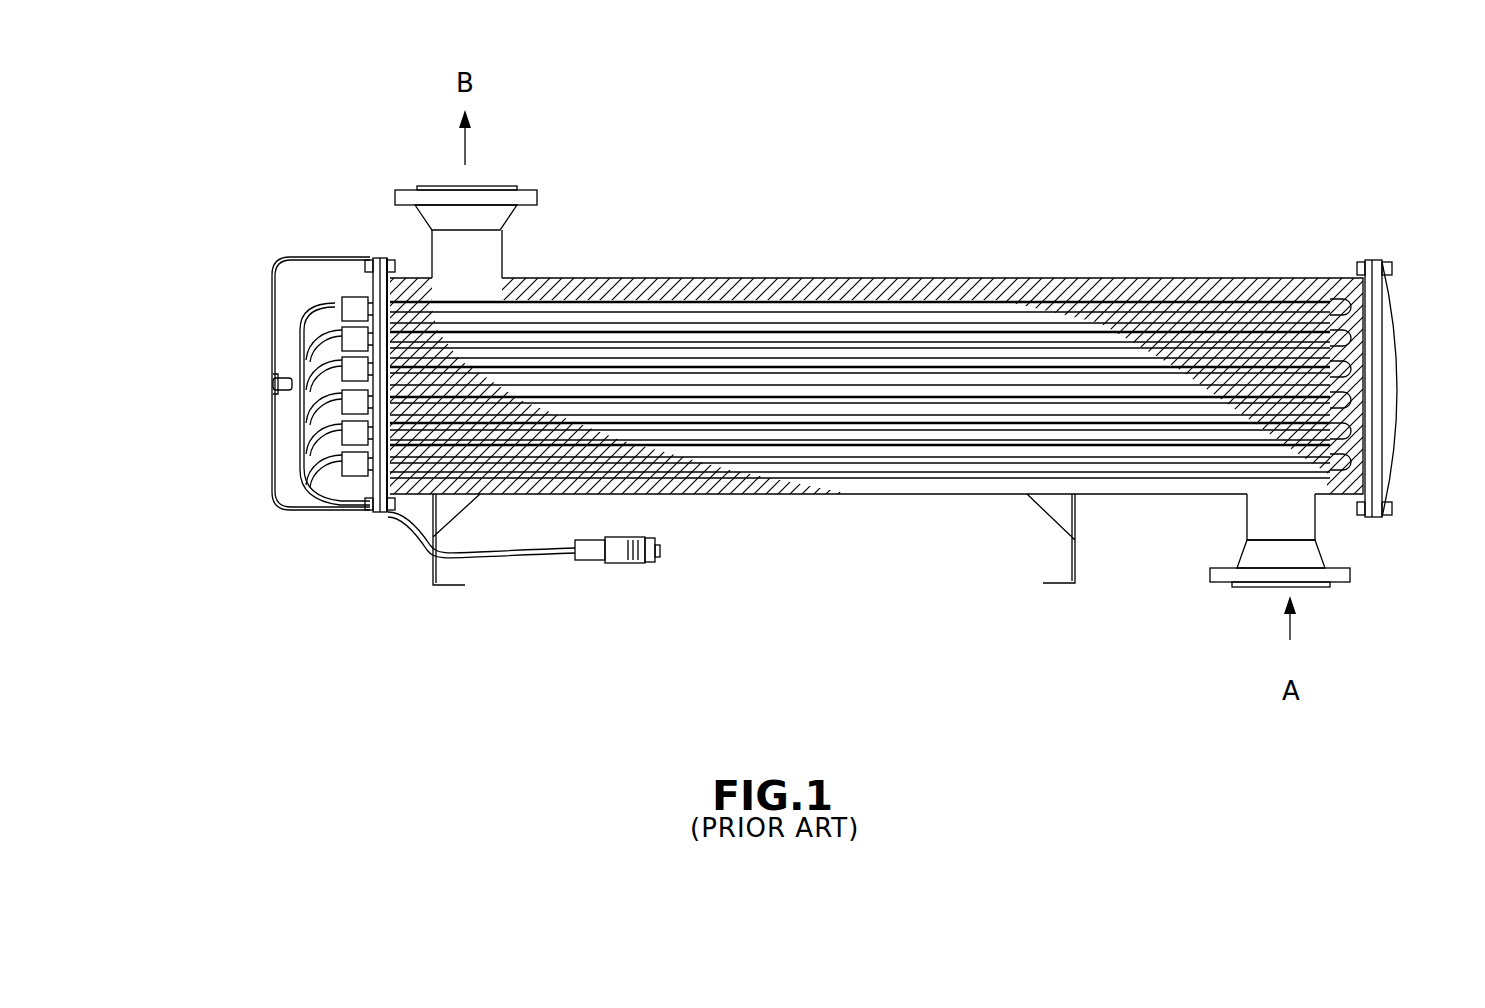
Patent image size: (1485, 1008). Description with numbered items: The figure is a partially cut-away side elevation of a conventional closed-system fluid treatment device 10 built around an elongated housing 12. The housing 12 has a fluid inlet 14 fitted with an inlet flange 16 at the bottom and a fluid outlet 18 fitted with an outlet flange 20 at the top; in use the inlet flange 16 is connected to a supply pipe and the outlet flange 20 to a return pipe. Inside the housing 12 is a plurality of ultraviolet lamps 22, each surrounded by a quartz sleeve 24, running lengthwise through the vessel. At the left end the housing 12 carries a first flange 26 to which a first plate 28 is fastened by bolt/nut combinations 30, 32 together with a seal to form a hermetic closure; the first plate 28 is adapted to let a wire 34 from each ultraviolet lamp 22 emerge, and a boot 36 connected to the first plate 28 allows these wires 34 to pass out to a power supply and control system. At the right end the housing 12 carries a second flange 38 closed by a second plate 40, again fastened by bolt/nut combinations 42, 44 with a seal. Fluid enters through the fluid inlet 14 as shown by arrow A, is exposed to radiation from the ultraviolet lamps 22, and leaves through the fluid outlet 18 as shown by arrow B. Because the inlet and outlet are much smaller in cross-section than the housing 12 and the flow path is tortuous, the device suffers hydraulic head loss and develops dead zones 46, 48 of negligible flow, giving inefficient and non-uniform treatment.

The fluid treatment device 10 is at (1042, 685).
The housing 12 is at (870, 278).
The fluid inlet 14 is at (1240, 520).
The inlet flange 16 is at (1243, 590).
The fluid outlet 18 is at (505, 252).
The outlet flange 20 is at (500, 190).
The ultraviolet lamps 22 is at (783, 332).
The quartz sleeve 24 is at (683, 332).
The first flange 26 is at (362, 262).
The first plate 28 is at (372, 505).
The bolt/nut combination 30 is at (395, 268).
The bolt/nut combination 32 is at (368, 513).
The wire 34 is at (300, 410).
The boot 36 is at (273, 467).
The second flange 38 is at (1365, 262).
The second plate 40 is at (1383, 258).
The bolt/nut combination 42 is at (1360, 265).
The bolt/nut combination 44 is at (1378, 520).
The dead zone 46 is at (660, 495).
The dead zone 48 is at (1188, 280).